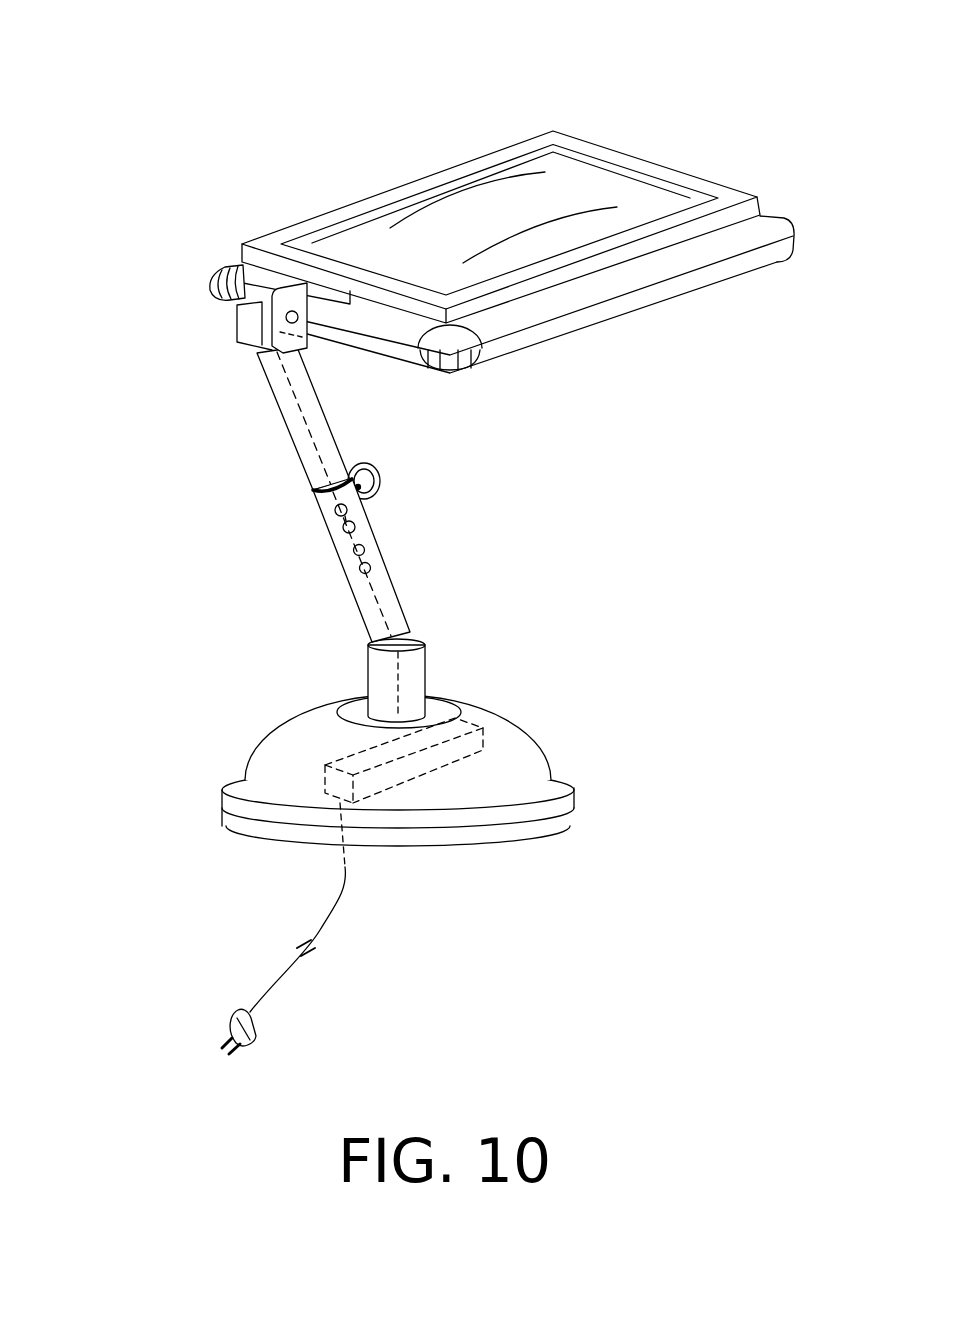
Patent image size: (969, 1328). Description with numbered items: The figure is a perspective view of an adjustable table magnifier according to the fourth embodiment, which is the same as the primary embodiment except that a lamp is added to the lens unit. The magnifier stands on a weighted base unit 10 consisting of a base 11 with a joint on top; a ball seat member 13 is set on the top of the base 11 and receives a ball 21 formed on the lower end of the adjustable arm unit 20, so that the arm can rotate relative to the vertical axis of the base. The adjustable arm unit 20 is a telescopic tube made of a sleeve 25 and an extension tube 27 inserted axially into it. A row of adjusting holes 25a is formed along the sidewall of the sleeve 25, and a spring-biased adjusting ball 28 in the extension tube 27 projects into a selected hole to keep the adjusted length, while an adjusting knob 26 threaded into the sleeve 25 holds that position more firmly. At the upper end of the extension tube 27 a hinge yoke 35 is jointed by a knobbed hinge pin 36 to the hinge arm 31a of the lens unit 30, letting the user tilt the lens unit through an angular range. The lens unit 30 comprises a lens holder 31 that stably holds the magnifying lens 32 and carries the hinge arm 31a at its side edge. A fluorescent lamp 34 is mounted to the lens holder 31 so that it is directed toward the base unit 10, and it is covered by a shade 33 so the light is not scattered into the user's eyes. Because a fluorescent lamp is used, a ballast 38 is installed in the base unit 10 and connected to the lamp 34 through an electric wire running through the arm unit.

The base unit 10 is at (373, 803).
The base 11 is at (513, 740).
The ball seat member 13 is at (420, 682).
The ball 21 is at (410, 633).
The adjustable arm unit 20 is at (315, 494).
The sleeve 25 is at (397, 583).
The adjusting holes 25a is at (340, 535).
The adjusting knob 26 is at (378, 480).
The extension tube 27 is at (290, 388).
The adjusting ball 28 is at (306, 553).
The lens unit 30 is at (496, 227).
The lens holder 31 is at (735, 188).
The hinge arm 31a is at (323, 313).
The magnifying lens 32 is at (567, 173).
The shade 33 is at (715, 244).
The lamp 34 is at (570, 317).
The hinge yoke 35 is at (240, 337).
The knobbed hinge pin 36 is at (223, 275).
The ballast 38 is at (425, 760).